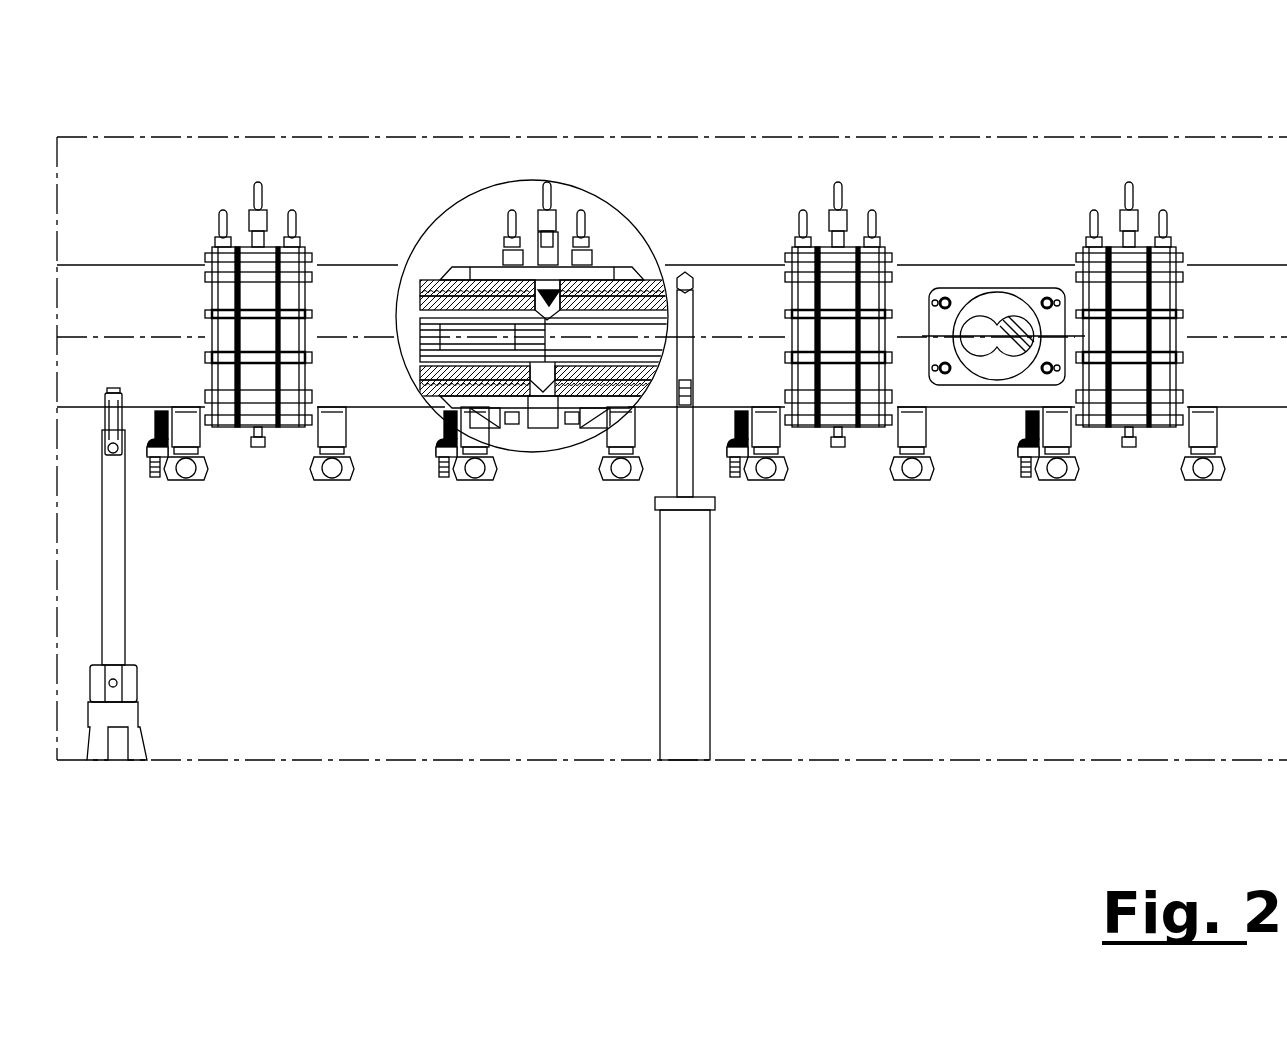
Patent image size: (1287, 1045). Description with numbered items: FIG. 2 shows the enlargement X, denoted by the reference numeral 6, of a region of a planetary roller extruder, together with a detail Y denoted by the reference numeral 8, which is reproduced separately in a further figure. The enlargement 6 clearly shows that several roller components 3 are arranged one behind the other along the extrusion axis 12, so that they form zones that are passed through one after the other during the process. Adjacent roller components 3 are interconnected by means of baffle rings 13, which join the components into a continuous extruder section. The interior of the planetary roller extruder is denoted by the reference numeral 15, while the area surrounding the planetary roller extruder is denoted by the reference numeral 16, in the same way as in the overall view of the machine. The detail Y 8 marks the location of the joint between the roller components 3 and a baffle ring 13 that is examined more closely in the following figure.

The roller component 3 is at (155, 300).
The baffle ring 13 is at (252, 290).
The detail Y 8 is at (428, 223).
The interior of the planetary roller extruder 15 is at (549, 300).
The surrounding area 16 is at (683, 207).
The enlargement X 6 is at (705, 137).
The extrusion axis 12 is at (1250, 335).